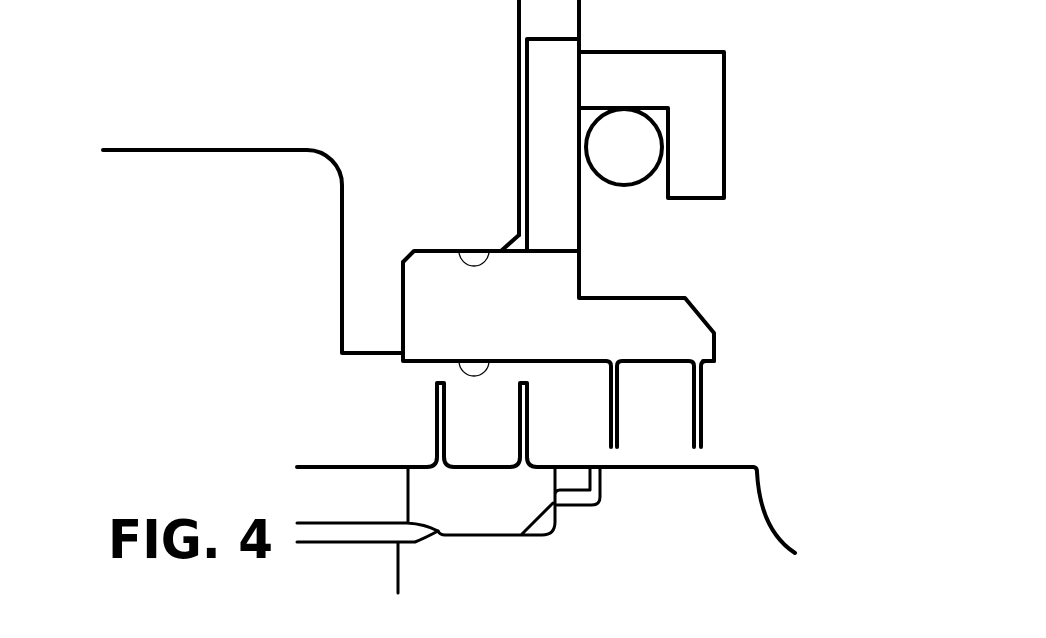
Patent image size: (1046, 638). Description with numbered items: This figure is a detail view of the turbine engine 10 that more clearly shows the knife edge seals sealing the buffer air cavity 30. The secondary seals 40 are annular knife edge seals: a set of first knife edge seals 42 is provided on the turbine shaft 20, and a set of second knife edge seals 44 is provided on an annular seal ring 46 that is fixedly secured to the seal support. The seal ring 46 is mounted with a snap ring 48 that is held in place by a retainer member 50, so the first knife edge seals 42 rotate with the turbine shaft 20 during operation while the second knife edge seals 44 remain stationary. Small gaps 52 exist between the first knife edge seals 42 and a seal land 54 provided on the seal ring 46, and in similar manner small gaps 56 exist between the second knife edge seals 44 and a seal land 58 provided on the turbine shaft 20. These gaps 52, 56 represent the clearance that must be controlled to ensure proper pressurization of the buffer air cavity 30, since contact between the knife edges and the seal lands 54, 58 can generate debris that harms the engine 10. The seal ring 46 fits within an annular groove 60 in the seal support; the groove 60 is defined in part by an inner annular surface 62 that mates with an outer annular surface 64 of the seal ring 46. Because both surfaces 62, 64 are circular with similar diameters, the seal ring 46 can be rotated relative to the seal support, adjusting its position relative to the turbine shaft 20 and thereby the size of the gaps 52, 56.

The engine 10 is at (470, 47).
The turbine shaft 20 is at (753, 540).
The buffer air cavity 30 is at (247, 352).
The secondary seals 40 is at (773, 370).
The first knife edge seals 42 is at (435, 403).
The second knife edge seals 44 is at (609, 412).
The seal ring 46 is at (553, 293).
The snap ring 48 is at (618, 155).
The retainer member 50 is at (657, 65).
The gaps 52 is at (421, 373).
The seal land 54 is at (497, 355).
The gaps 56 is at (717, 453).
The seal land 58 is at (752, 465).
The annular groove 60 is at (381, 272).
The inner annular surface 62 is at (497, 245).
The outer annular surface 64 is at (425, 250).